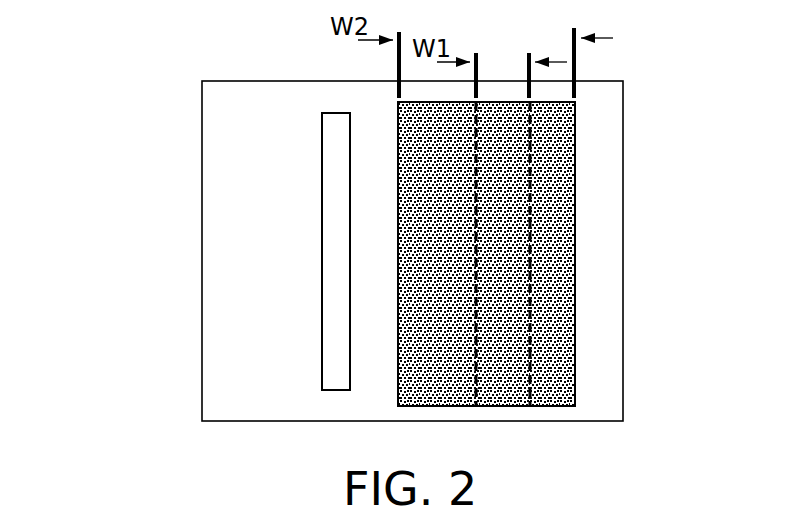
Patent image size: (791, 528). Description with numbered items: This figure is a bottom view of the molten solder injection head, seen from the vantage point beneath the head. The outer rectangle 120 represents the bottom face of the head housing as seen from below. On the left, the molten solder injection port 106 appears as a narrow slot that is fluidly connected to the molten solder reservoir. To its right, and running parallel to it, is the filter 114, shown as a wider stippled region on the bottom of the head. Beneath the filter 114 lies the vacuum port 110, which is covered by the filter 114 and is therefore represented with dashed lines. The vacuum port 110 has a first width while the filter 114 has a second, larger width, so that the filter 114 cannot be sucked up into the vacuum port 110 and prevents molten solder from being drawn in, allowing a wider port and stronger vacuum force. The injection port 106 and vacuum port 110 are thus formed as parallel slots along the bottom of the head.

The substrate/display area 120 is at (202, 285).
The molten solder injection port 106 is at (318, 385).
The vacuum port 110 is at (530, 200).
The filter 114 is at (575, 332).